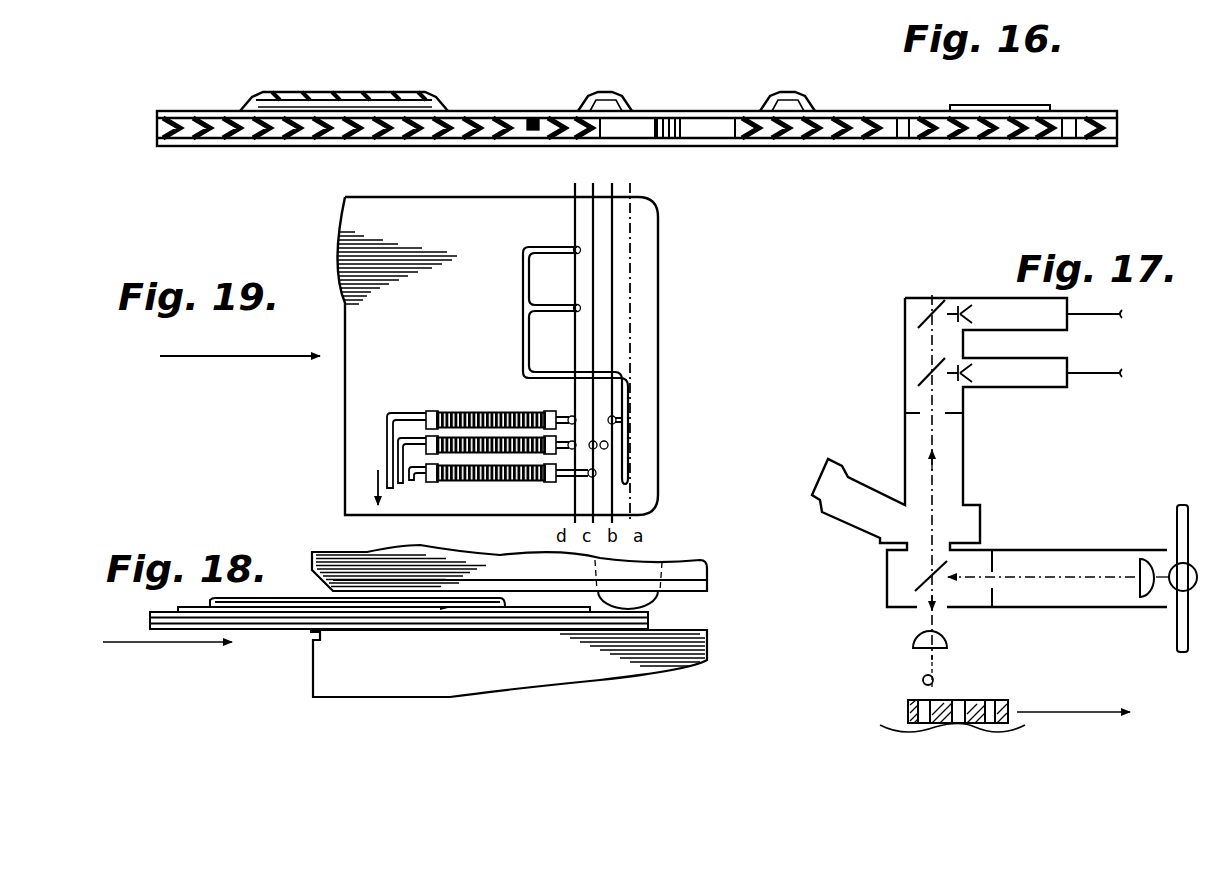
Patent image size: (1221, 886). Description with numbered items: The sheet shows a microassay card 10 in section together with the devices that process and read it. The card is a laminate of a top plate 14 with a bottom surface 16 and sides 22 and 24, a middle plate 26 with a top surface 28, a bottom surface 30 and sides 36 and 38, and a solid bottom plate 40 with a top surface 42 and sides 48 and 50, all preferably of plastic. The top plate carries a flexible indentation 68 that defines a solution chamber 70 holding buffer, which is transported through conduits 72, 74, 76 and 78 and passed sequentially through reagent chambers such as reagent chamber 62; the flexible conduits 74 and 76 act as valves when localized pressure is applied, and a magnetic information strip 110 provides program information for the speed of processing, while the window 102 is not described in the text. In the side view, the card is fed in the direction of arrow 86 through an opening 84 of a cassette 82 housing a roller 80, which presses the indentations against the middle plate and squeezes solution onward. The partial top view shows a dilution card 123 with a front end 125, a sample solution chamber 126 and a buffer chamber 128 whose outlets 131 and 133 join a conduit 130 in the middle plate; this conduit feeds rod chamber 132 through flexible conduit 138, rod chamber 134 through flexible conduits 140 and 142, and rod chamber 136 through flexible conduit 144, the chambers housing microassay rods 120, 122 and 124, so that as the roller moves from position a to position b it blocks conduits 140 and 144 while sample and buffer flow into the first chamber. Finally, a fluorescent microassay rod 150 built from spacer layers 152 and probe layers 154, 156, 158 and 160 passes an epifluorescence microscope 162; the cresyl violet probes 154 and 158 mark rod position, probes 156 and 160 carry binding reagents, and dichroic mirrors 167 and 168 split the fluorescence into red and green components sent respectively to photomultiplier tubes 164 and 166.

In FIG. 16, the microassay card 10 is at (835, 105).
In FIG. 18, the microassay card 10 is at (292, 637).
In FIG. 16, the top plate 14 is at (667, 118).
In FIG. 16, the bottom surface 16 is at (1068, 125).
In FIG. 16, the side 22 is at (1117, 111).
In FIG. 16, the side 24 is at (160, 111).
In FIG. 16, the middle plate 26 is at (460, 118).
In FIG. 16, the top surface 28 is at (228, 111).
In FIG. 16, the bottom surface 30 is at (1030, 146).
In FIG. 16, the side 36 is at (157, 127).
In FIG. 16, the side 38 is at (1120, 125).
In FIG. 16, the bottom plate 40 is at (230, 146).
In FIG. 16, the top surface 42 is at (305, 138).
In FIG. 16, the side 48 is at (1115, 146).
In FIG. 16, the side 50 is at (157, 146).
In FIG. 16, the reagent chamber 62 is at (705, 128).
In FIG. 16, the flexible indentation 68 is at (320, 92).
In FIG. 16, the solution chamber 70 is at (360, 104).
In FIG. 16, the conduit 72 is at (533, 118).
In FIG. 16, the flexible conduit 74 is at (605, 92).
In FIG. 16, the flexible conduit 76 is at (785, 92).
In FIG. 16, the conduit 78 is at (905, 138).
In FIG. 18, the roller 80 is at (665, 603).
In FIG. 18, the cassette 82 is at (340, 562).
In FIG. 18, the opening 84 is at (392, 590).
In FIG. 18, the arrow 86 is at (175, 645).
In FIG. 16, the window 102 is at (630, 128).
In FIG. 16, the magnetic information strip 110 is at (965, 105).
In FIG. 19, the microassay rod 120 is at (445, 412).
In FIG. 19, the microassay rod 122 is at (426, 466).
In FIG. 19, the microassay card 123 is at (325, 265).
In FIG. 19, the microassay rod 124 is at (448, 482).
In FIG. 19, the front end 125 is at (660, 318).
In FIG. 19, the sample solution chamber 126 is at (620, 240).
In FIG. 19, the buffer chamber 128 is at (625, 300).
In FIG. 19, the conduit 130 is at (523, 340).
In FIG. 19, the outlet 131 is at (545, 247).
In FIG. 19, the rod chamber 132 is at (550, 412).
In FIG. 19, the outlet 133 is at (545, 300).
In FIG. 19, the rod chamber 134 is at (426, 420).
In FIG. 19, the rod chamber 136 is at (560, 480).
In FIG. 19, the flexible conduit 138 is at (635, 382).
In FIG. 19, the flexible conduit 140 is at (640, 420).
In FIG. 19, the flexible conduit 142 is at (650, 452).
In FIG. 19, the flexible conduit 144 is at (655, 480).
In FIG. 17, the microassay rod 150 is at (893, 698).
In FIG. 17, the spacer layers 152 is at (900, 725).
In FIG. 17, the probe layer 154 is at (918, 700).
In FIG. 17, the probe layer 156 is at (945, 700).
In FIG. 17, the probe layer 158 is at (965, 700).
In FIG. 17, the probe layer 160 is at (990, 700).
In FIG. 17, the epifluorescence microscope 162 is at (1005, 460).
In FIG. 17, the photomultiplier tube 164 is at (1050, 330).
In FIG. 17, the photomultiplier tube 166 is at (1035, 387).
In FIG. 17, the dichroic mirror 167 is at (940, 295).
In FIG. 17, the dichroic mirror 168 is at (918, 378).